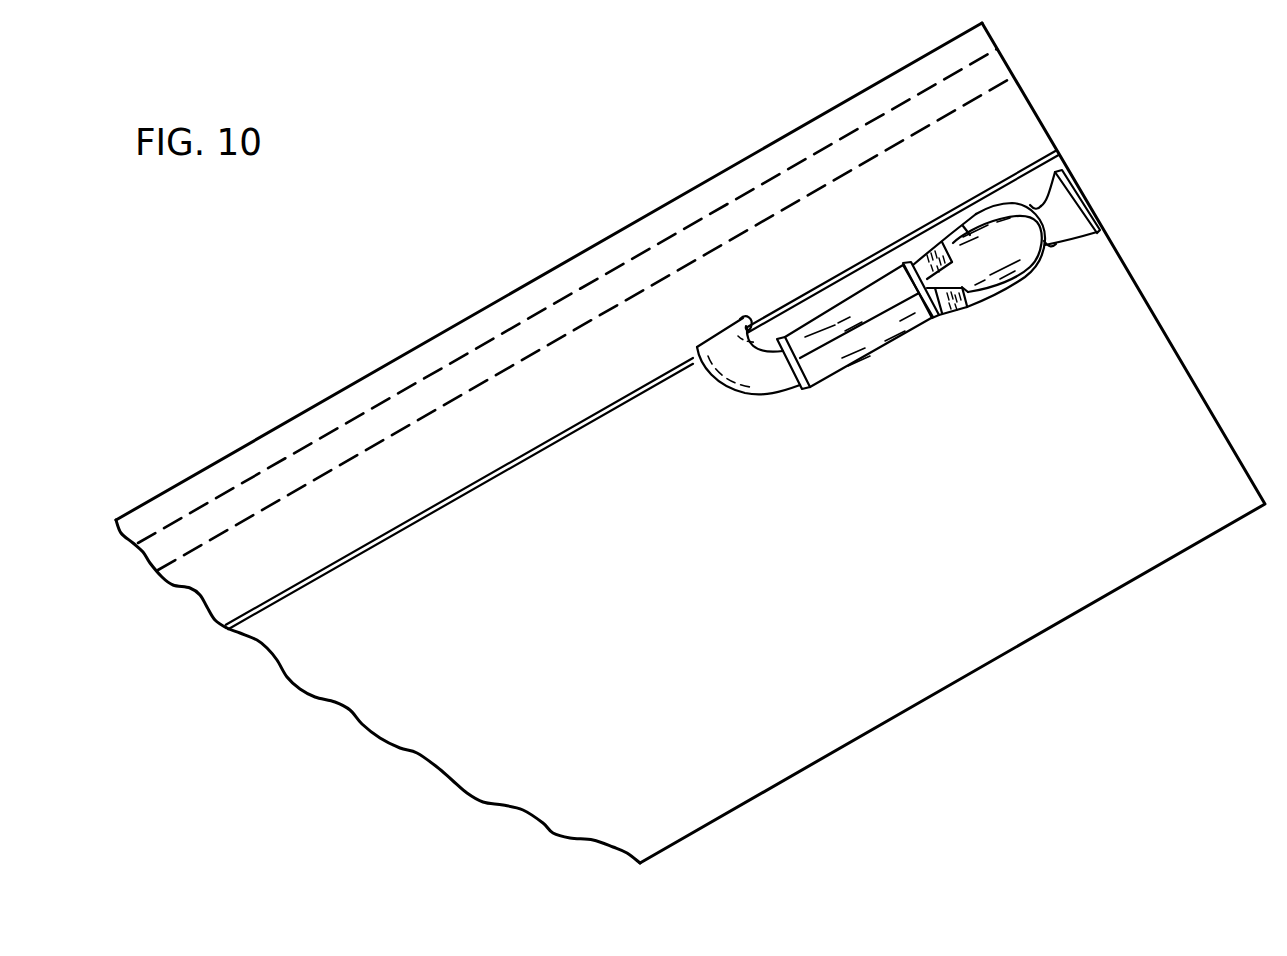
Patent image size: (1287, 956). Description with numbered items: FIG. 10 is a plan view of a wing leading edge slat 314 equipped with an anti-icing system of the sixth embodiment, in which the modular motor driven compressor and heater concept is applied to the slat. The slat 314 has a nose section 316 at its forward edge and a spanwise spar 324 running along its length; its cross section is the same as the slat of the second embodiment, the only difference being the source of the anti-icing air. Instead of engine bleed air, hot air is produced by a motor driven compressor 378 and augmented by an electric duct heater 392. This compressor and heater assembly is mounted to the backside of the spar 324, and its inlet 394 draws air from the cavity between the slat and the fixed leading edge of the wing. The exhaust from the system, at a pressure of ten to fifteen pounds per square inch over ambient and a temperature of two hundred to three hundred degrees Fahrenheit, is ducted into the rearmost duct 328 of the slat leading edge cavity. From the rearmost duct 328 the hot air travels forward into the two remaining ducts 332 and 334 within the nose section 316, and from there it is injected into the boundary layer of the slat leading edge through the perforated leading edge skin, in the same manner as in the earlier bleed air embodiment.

The nose section 316 is at (998, 42).
The leading edge slat 314 is at (642, 218).
The duct 334 is at (520, 294).
The duct 332 is at (1007, 72).
The rearmost duct 328 is at (525, 439).
The spanwise spar 324 is at (424, 515).
The electric duct heater 392 is at (871, 353).
The motor driven compressor 378 is at (1018, 283).
The inlet 394 is at (1098, 228).